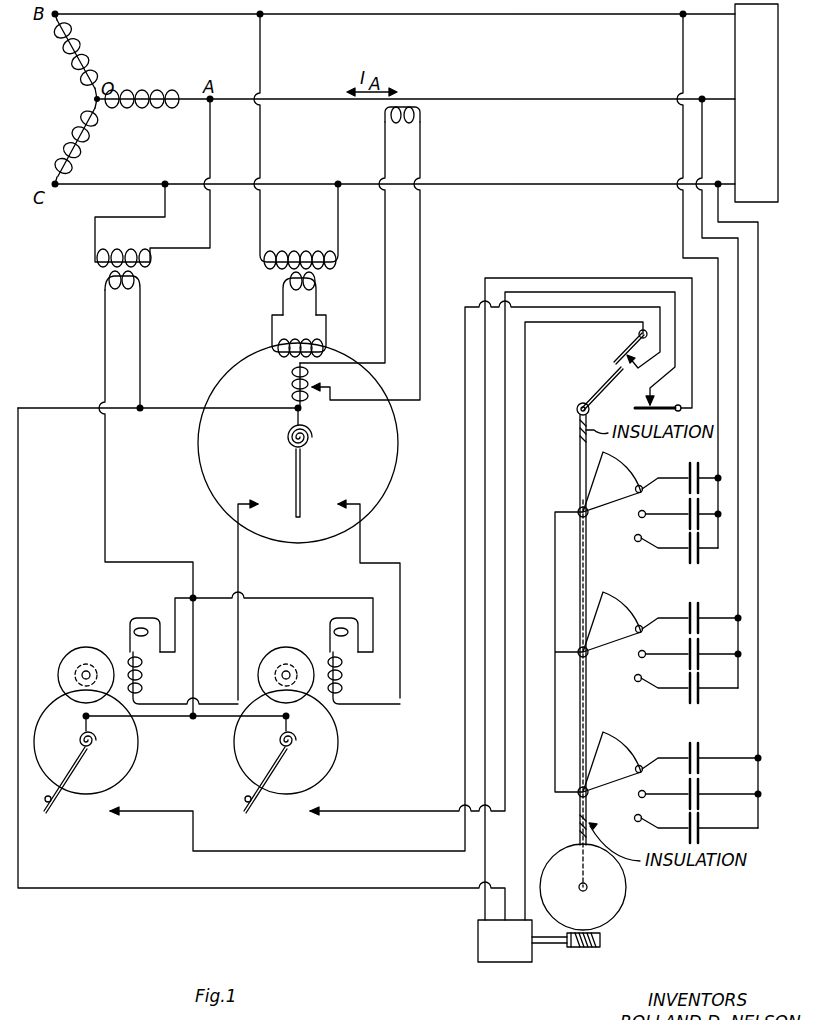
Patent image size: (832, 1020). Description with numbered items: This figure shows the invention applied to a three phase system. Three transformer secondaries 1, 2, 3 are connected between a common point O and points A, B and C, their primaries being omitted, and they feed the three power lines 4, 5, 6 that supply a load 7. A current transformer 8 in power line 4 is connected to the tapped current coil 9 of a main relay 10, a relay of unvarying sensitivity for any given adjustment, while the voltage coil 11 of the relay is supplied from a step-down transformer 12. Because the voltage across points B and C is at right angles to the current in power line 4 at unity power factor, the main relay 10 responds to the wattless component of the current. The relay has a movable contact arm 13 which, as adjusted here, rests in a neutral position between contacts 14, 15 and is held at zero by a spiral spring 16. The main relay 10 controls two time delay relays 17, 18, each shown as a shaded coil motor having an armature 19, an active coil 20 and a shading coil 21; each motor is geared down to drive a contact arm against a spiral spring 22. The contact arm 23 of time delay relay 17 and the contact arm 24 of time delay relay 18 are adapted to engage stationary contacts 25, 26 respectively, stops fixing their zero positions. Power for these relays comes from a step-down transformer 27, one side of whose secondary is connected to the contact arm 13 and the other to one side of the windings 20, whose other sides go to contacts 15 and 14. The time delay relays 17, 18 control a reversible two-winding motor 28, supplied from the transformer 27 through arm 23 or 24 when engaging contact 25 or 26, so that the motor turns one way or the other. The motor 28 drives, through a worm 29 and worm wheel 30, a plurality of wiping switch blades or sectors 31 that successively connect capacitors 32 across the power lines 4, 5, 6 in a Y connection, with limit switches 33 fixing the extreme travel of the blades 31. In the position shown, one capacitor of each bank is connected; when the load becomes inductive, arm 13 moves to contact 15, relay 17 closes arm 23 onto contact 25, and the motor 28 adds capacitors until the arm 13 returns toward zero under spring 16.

The transformer secondary 1 is at (134, 92).
The transformer secondary 2 is at (64, 62).
The transformer secondary 3 is at (70, 125).
The power line 4 is at (547, 106).
The power line 5 is at (525, 20).
The power line 6 is at (539, 190).
The load 7 is at (734, 54).
The current transformer 8 is at (398, 128).
The tapped current coil 9 is at (288, 384).
The main relay 10 is at (197, 448).
The voltage coil 11 is at (298, 337).
The step-down transformer 12 is at (273, 278).
The movable contact arm 13 is at (301, 472).
The contact 14 is at (341, 503).
The contact 15 is at (258, 503).
The spiral spring 16 is at (313, 437).
The time delay relay 17 is at (138, 756).
The time delay relay 18 is at (338, 756).
The armature 19 is at (70, 648).
The active coil 20 is at (145, 672).
The shading coil 21 is at (130, 624).
The spiral spring 22 is at (76, 742).
The contact arm 23 is at (52, 800).
The contact arm 24 is at (252, 800).
The stationary contact 25 is at (109, 819).
The stationary contact 26 is at (324, 814).
The step-down transformer 27 is at (96, 272).
The reversible motor 28 is at (508, 966).
The worm 29 is at (590, 950).
The worm wheel 30 is at (624, 893).
The wiping switch blade 31 is at (622, 480).
The capacitor 32 is at (689, 465).
The limit switch 33 is at (618, 340).